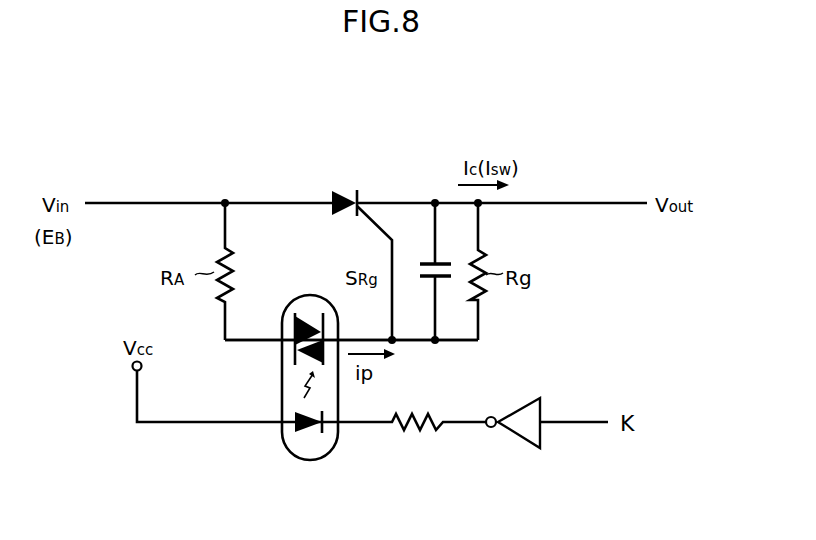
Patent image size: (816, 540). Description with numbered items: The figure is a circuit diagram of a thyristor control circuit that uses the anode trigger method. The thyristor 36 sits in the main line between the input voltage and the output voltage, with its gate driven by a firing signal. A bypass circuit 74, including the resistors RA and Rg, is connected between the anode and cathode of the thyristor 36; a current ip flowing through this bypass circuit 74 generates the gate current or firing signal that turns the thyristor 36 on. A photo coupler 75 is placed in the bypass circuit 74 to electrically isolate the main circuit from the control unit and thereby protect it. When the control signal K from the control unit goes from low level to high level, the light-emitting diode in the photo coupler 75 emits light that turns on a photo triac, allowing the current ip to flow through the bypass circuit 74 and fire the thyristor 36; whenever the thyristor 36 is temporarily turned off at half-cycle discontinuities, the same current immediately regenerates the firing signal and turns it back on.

The thyristor 36 is at (345, 191).
The bypass circuit 74 is at (482, 330).
The photo coupler 75 is at (330, 452).